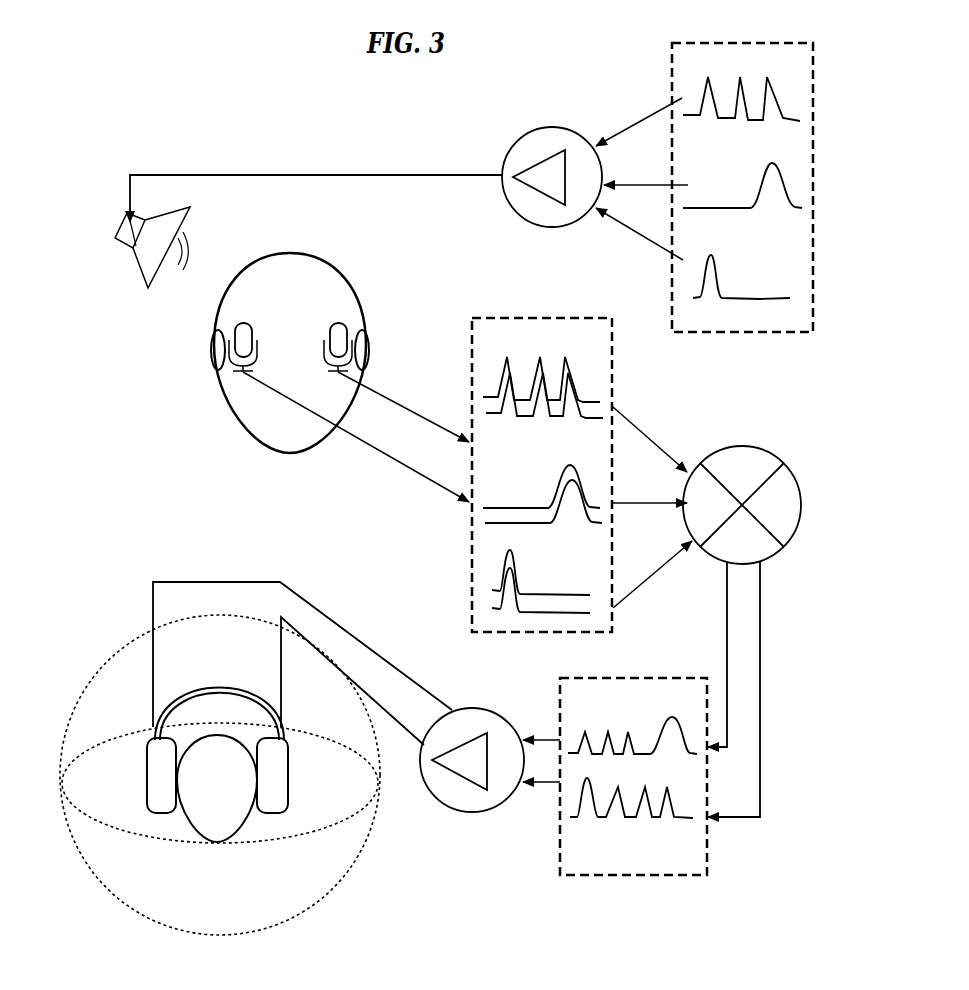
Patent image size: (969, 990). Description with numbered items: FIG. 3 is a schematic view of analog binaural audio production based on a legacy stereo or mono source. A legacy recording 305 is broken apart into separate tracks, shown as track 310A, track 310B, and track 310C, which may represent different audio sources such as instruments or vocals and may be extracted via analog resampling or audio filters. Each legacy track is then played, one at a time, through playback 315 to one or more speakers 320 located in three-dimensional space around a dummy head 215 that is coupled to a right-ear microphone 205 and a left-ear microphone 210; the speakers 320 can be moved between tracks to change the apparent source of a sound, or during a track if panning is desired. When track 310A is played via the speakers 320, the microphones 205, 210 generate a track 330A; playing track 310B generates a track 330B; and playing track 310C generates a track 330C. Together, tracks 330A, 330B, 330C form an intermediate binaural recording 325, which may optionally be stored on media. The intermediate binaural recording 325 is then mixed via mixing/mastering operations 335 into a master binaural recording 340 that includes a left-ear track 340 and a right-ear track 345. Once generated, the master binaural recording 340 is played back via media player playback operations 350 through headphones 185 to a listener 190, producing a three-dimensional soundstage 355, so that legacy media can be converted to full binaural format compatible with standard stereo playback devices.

The legacy recording 305 is at (837, 35).
The track 310A is at (777, 73).
The track 310B is at (746, 203).
The track 310C is at (788, 296).
The playback 315 is at (604, 121).
The speakers 320 is at (259, 201).
The dummy head 215 is at (408, 250).
The left-ear microphone 210 is at (266, 323).
The right-ear microphone 205 is at (344, 323).
The intermediate binaural recording 325 is at (596, 311).
The track 330A is at (576, 345).
The track 330B is at (526, 496).
The track 330C is at (585, 591).
The mixing/mastering operations 335 is at (759, 438).
The master binaural recording 340 is at (668, 720).
The right-ear track 345 is at (679, 840).
The media player playback operations 350 is at (529, 838).
The headphones 185 is at (229, 681).
The listener 190 is at (233, 806).
The three-dimensional soundstage 355 is at (288, 911).